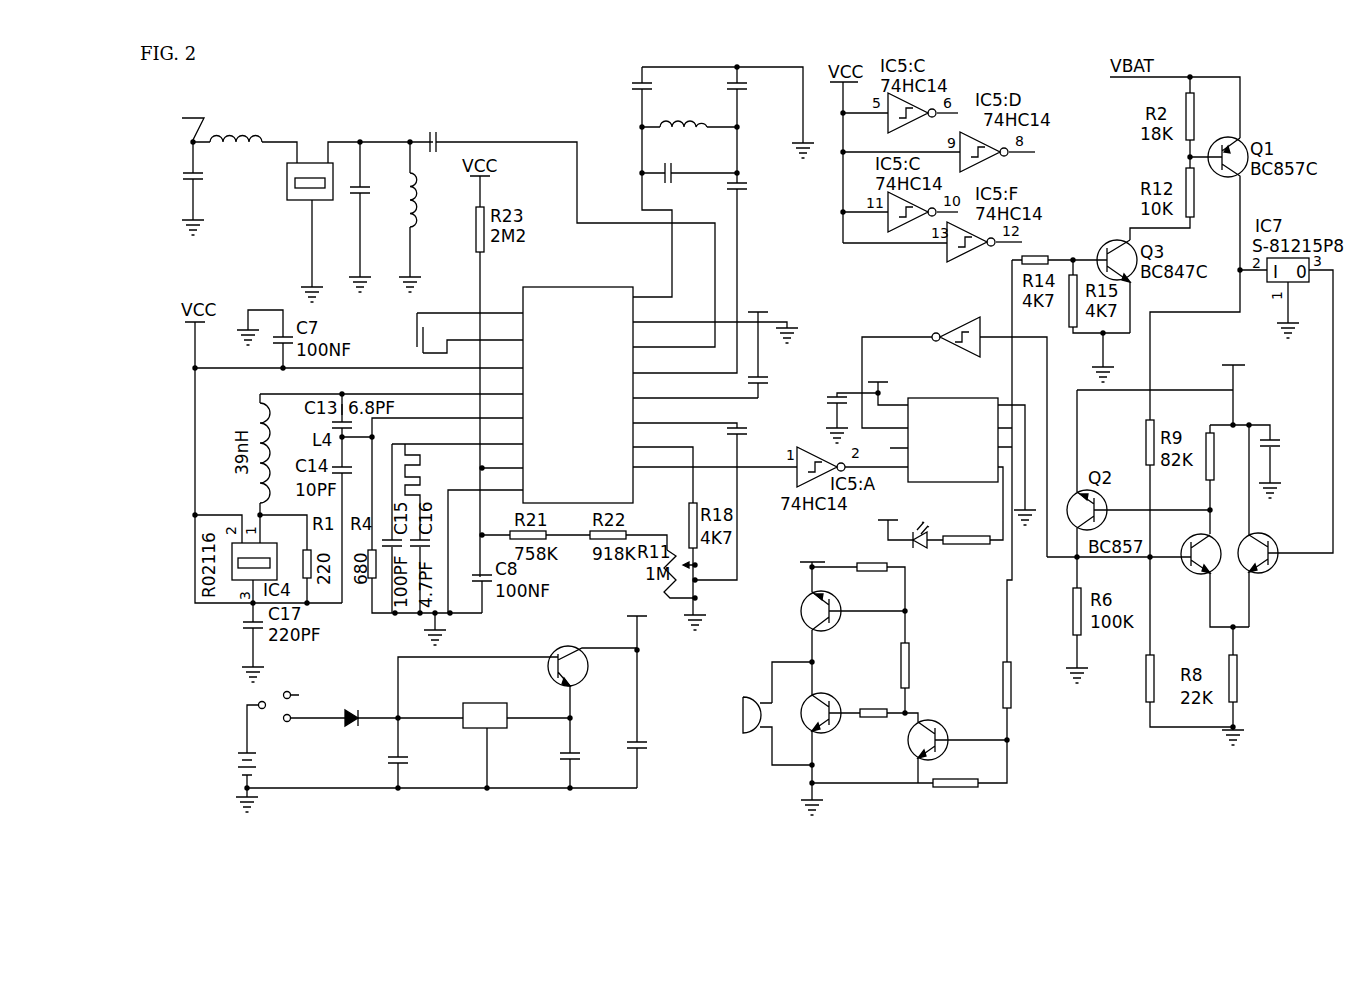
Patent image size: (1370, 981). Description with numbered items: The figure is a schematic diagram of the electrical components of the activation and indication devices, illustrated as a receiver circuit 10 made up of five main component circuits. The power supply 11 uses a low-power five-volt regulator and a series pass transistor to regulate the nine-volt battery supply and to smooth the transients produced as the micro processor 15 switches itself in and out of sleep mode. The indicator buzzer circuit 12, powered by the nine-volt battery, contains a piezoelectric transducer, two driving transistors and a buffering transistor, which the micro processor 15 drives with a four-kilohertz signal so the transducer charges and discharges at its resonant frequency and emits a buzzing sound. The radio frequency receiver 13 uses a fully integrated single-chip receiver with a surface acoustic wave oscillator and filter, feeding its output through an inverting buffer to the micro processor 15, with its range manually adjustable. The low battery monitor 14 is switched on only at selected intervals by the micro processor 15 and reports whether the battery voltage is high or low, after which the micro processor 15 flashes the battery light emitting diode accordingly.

The receiver circuit 10 is at (582, 116).
The power supply 11 is at (355, 773).
The indicator buzzer circuit 12 is at (758, 745).
The radio frequency receiver 13 is at (762, 283).
The low battery monitor 14 is at (1265, 630).
The micro processor 15 is at (983, 369).